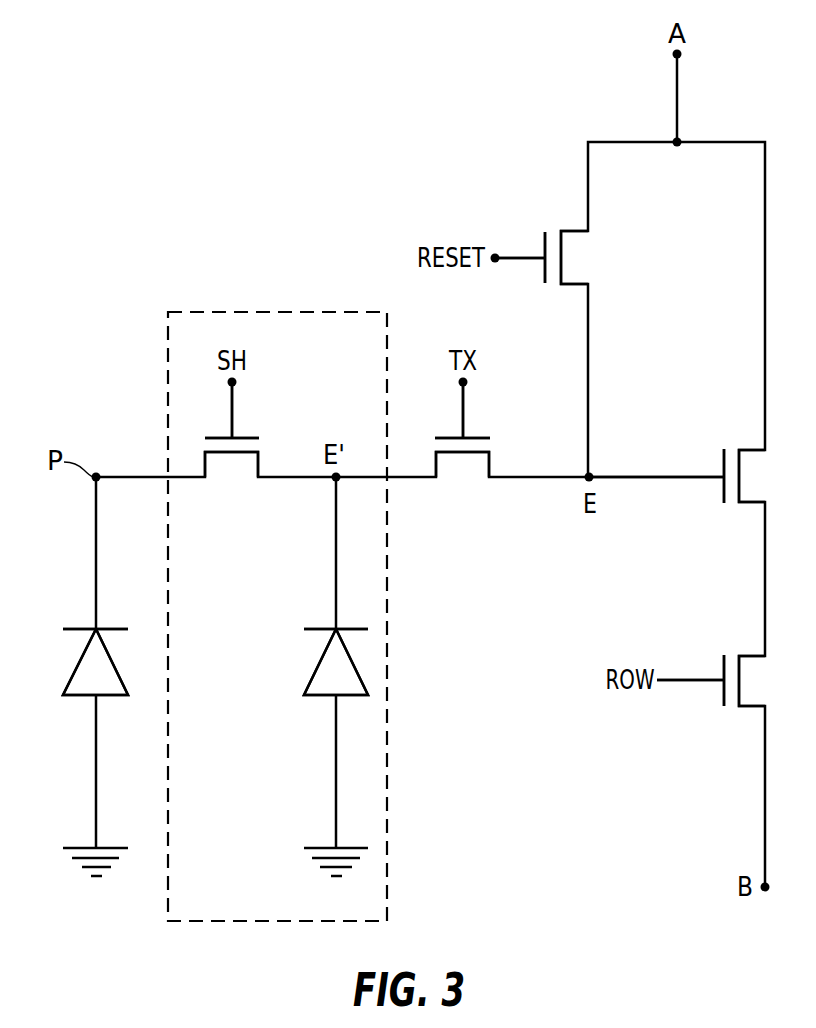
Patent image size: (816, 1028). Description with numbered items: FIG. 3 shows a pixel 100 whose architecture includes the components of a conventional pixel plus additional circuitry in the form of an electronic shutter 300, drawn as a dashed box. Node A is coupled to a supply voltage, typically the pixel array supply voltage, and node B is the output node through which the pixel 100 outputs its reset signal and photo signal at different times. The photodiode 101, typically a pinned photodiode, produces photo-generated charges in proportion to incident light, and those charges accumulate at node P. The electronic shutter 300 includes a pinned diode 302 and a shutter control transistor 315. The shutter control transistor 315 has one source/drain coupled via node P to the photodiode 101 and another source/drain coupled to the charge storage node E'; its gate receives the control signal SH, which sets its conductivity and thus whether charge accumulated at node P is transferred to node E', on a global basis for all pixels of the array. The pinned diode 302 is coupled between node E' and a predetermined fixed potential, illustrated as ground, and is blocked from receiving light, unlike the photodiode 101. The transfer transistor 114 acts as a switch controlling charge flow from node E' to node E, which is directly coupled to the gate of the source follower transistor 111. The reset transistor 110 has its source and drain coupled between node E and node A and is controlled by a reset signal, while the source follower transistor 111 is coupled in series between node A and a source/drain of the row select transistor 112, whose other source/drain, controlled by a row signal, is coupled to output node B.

The pixel 100 is at (296, 146).
The electronic shutter 300 is at (208, 312).
The shutter control transistor 315 is at (257, 463).
The transfer transistor 114 is at (488, 462).
The reset transistor 110 is at (574, 231).
The source follower transistor 111 is at (752, 449).
The row select transistor 112 is at (752, 655).
The photodiode 101 is at (96, 673).
The pinned diode 302 is at (336, 673).